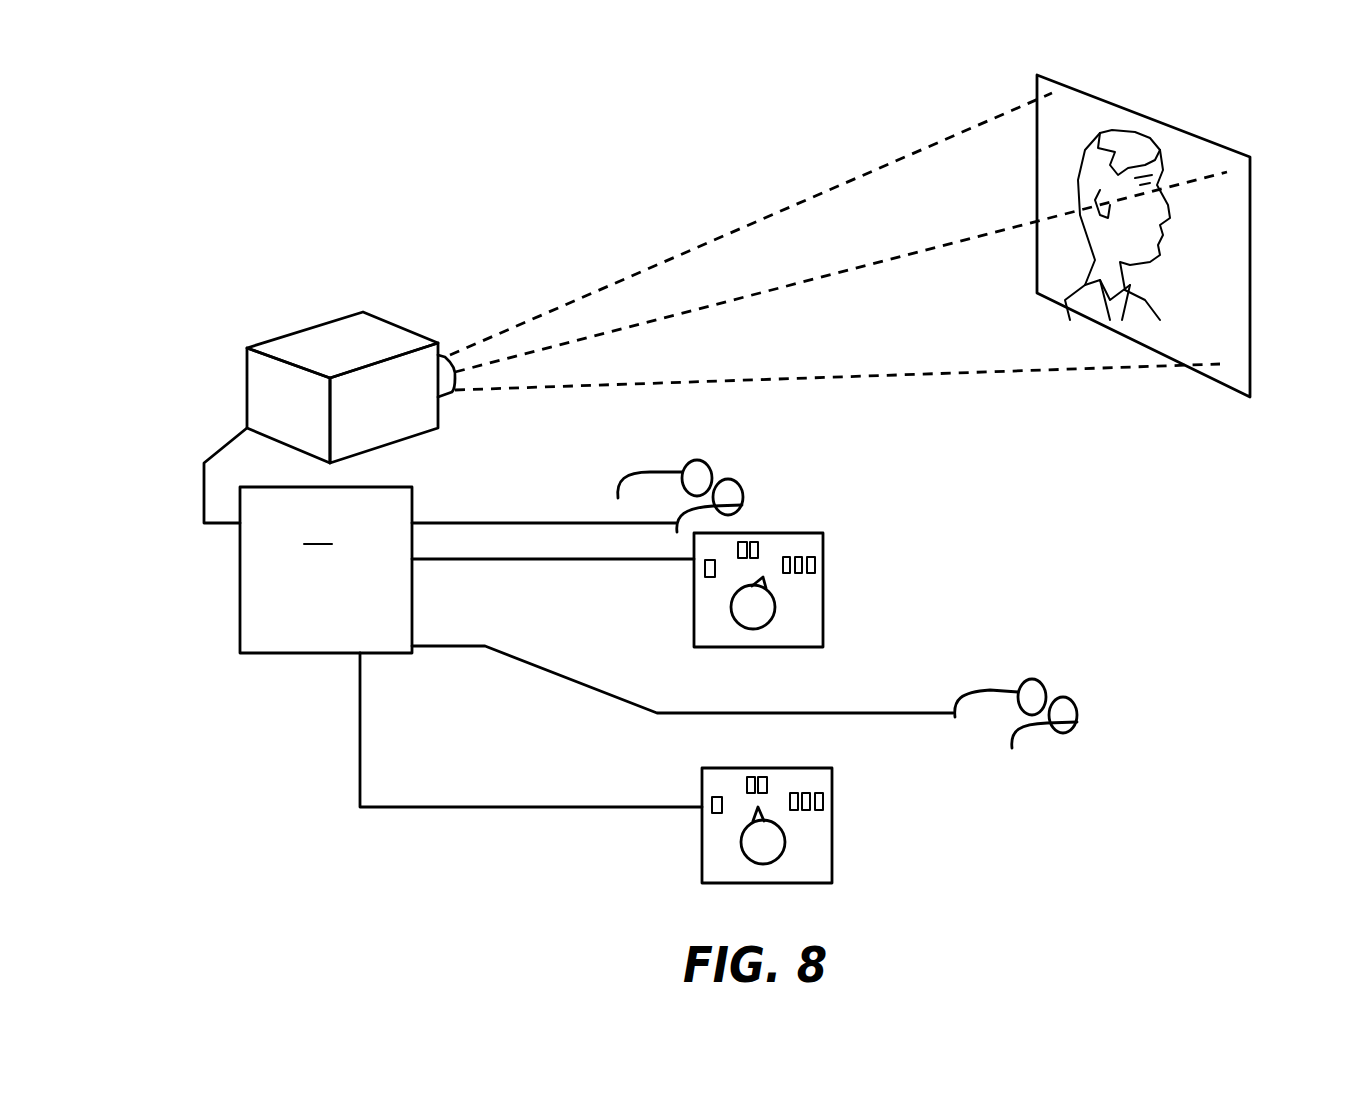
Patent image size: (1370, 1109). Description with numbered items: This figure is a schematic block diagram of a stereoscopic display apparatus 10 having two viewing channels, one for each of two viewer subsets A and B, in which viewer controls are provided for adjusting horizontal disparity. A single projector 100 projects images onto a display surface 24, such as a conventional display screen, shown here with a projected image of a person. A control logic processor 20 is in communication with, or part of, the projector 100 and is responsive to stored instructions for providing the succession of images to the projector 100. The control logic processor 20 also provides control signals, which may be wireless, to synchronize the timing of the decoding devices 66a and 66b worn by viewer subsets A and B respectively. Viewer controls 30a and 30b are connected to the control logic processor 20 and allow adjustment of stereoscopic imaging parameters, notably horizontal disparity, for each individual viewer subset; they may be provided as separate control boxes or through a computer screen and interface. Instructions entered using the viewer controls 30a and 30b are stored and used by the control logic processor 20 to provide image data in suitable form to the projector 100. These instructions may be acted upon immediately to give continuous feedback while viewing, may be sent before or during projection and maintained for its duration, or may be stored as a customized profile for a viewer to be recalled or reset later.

The stereoscopic display apparatus 10 is at (366, 204).
The projector 100 is at (406, 419).
The control logic processor 20 is at (578, 617).
The display surface 24 is at (1248, 367).
The decoding device 66a is at (1023, 682).
The decoding device 66b is at (658, 472).
The viewer control 30a is at (833, 843).
The viewer control 30b is at (825, 588).
The viewer subset A is at (1082, 667).
The viewer subset B is at (758, 460).